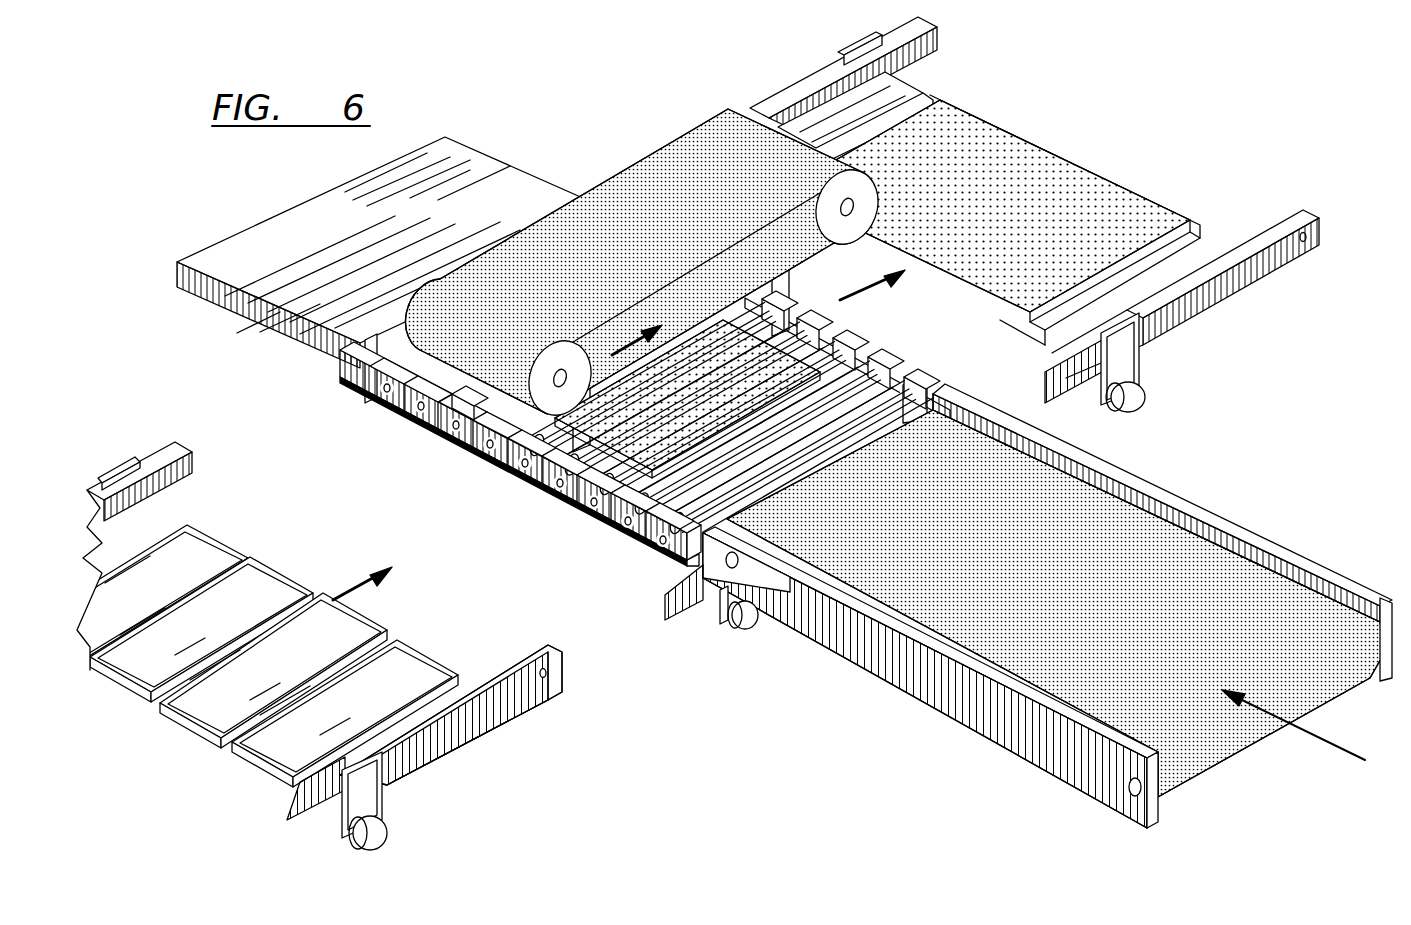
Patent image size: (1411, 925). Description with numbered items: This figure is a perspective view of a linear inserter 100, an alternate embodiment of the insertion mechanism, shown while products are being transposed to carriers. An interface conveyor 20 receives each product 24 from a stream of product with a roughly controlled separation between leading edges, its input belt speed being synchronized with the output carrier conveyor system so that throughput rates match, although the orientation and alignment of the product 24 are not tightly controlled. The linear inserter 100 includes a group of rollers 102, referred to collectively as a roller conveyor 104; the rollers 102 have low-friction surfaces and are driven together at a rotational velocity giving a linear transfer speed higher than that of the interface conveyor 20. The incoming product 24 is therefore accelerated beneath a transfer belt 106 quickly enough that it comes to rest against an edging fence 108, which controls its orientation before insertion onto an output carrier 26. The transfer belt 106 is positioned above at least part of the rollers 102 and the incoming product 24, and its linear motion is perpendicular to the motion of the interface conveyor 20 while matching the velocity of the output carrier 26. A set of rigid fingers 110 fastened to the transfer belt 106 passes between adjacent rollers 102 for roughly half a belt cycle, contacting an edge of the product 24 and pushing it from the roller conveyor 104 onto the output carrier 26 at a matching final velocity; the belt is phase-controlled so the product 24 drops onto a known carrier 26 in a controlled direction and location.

The interface conveyor 20 is at (1155, 530).
The product 24 is at (1037, 162).
The output carrier 26 is at (938, 28).
The linear inserter 100 is at (538, 128).
The rollers 102 is at (536, 455).
The roller conveyor 104 is at (392, 437).
The transfer belt 106 is at (625, 200).
The edging fence 108 is at (322, 332).
The rigid fingers 110 is at (467, 442).